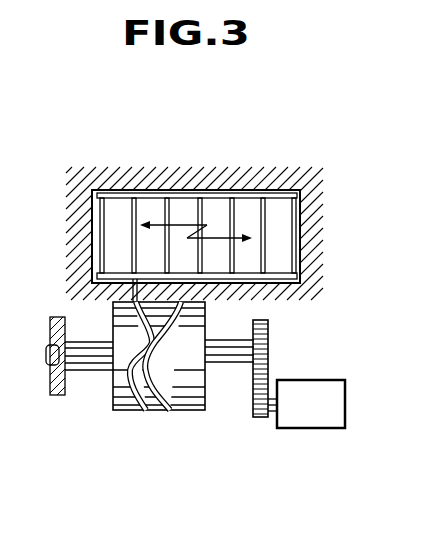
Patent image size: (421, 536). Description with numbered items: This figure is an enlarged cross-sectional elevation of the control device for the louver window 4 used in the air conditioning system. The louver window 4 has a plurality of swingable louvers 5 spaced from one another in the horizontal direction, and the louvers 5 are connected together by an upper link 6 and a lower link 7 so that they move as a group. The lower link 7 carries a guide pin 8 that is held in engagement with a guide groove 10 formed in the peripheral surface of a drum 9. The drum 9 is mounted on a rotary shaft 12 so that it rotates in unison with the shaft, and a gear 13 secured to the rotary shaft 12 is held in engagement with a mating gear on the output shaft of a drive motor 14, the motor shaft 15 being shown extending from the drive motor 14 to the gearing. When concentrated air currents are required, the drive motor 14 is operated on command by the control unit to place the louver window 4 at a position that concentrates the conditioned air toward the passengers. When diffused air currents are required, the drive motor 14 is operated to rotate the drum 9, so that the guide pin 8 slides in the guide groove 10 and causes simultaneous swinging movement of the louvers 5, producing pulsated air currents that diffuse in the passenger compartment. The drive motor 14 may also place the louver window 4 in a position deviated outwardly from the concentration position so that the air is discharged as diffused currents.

The louver window 4 is at (337, 228).
The swingable louvers 5 is at (266, 206).
The upper link 6 is at (190, 192).
The lower link 7 is at (278, 283).
The guide pin 8 is at (120, 299).
The drum 9 is at (192, 402).
The guide groove 10 is at (130, 404).
The rotary shaft 12 is at (226, 364).
The gear 13 is at (264, 362).
The drive motor 14 is at (329, 385).
The motor shaft 15 is at (261, 418).